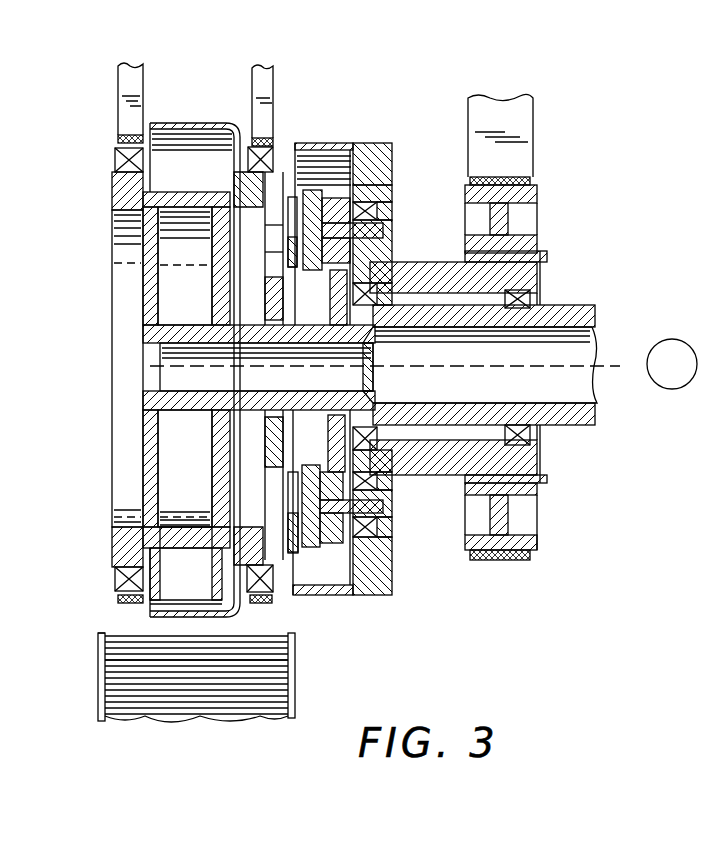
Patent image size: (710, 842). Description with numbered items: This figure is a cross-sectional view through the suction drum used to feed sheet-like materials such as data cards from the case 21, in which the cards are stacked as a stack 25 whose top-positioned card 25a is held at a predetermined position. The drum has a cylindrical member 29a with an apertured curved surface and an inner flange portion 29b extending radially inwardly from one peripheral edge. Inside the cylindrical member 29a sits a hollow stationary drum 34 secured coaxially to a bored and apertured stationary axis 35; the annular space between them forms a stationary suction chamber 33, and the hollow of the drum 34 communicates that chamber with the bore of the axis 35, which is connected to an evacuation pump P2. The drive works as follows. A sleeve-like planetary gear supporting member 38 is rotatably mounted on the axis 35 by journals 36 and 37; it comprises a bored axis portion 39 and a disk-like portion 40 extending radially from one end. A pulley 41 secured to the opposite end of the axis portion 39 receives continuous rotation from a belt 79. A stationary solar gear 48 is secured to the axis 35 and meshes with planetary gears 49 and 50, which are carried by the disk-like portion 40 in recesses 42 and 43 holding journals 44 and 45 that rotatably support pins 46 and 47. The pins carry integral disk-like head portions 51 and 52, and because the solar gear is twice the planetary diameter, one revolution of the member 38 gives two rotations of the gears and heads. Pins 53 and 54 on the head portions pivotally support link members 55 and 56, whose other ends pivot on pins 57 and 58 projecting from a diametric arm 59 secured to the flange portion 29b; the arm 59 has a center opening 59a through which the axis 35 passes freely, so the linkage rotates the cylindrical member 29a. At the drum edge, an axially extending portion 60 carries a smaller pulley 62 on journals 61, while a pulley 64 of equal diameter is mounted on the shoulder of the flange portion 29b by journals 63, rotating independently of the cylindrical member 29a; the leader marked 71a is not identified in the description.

The case 21 is at (98, 690).
The stack 25 is at (208, 698).
The top-positioned card 25a is at (98, 632).
The cylindrical member 29a is at (188, 123).
The flange portion 29b is at (192, 164).
The suction chamber 33 is at (185, 553).
The hollow stationary drum 34 is at (158, 281).
The stationary axis 35 is at (558, 338).
The journal 36 is at (528, 297).
The journal 37 is at (378, 316).
The planetary gear supporting member 38 is at (410, 280).
The bored axis portion 39 is at (528, 460).
The disk-like portion 40 is at (358, 178).
The pulley 41 is at (533, 183).
The recess 42 is at (381, 216).
The recess 43 is at (383, 523).
The journal 44 is at (373, 194).
The journal 45 is at (383, 550).
The pin 46 is at (310, 188).
The pin 47 is at (336, 513).
The stationary solar gear 48 is at (335, 283).
The planetary gear 49 is at (343, 203).
The planetary gear 50 is at (390, 576).
The disk-like head portion 51 is at (290, 198).
The disk-like head portion 52 is at (336, 499).
The pin 53 is at (278, 276).
The pin 54 is at (286, 485).
The link member 55 is at (285, 243).
The link member 56 is at (288, 498).
The pin 57 is at (283, 210).
The pin 58 is at (288, 520).
The diametric arm 59 is at (282, 364).
The center opening 59a is at (332, 448).
The axially extending portion 60 is at (118, 198).
The journals 61 is at (115, 160).
The pulley 62 is at (118, 139).
The journals 63 is at (286, 153).
The pulley 64 is at (248, 147).
The tube 71a is at (132, 87).
The belt 79 is at (476, 118).
The evacuation pump P2 is at (672, 364).